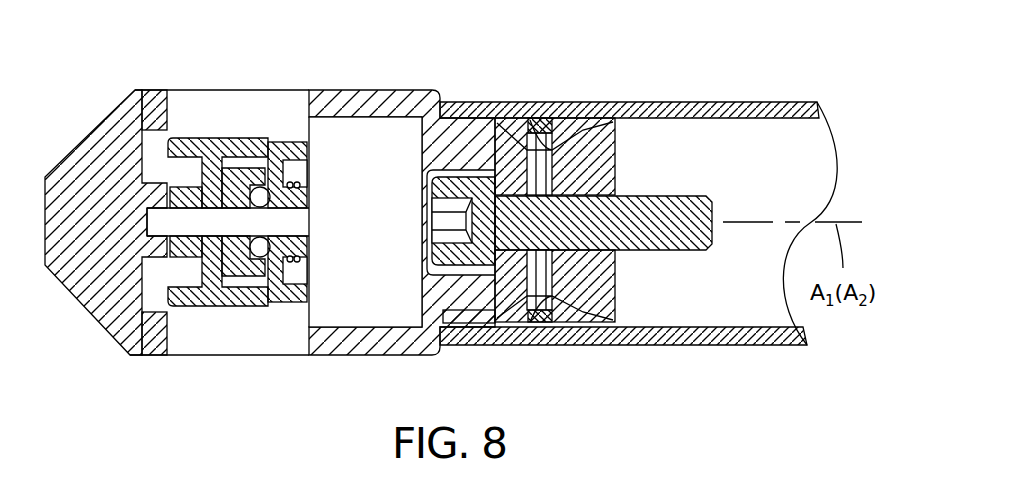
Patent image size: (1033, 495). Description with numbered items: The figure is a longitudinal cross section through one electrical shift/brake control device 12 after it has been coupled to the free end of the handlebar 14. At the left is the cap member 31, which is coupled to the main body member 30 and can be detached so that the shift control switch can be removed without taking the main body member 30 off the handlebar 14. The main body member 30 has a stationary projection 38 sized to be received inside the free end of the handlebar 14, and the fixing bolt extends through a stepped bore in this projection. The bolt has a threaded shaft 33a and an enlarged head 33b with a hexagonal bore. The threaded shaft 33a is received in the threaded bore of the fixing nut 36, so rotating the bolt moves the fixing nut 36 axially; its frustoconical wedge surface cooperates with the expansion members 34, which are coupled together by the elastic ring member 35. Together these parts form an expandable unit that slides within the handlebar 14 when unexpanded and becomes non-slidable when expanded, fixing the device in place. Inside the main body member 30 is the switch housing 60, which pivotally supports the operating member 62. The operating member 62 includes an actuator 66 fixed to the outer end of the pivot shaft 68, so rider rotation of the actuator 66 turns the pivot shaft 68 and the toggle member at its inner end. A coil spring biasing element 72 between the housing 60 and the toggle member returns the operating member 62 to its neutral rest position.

The electrical shift/brake control device 12 is at (340, 50).
The handlebar 14 is at (722, 100).
The main body member 30 is at (668, 258).
The cap member 31 is at (88, 306).
The threaded shaft 33a is at (668, 194).
The enlarged head 33b is at (469, 180).
The expansion members 34 is at (605, 118).
The elastic ring member 35 is at (543, 324).
The fixing nut 36 is at (617, 292).
The stationary projection 38 is at (478, 316).
The housing 60 is at (383, 142).
The operating member 62 is at (238, 318).
The actuator 66 is at (210, 157).
The pivot shaft 68 is at (207, 237).
The biasing element 72 is at (288, 158).